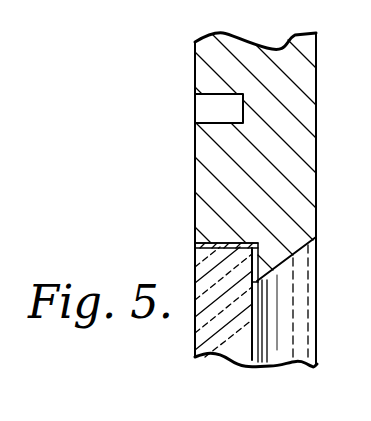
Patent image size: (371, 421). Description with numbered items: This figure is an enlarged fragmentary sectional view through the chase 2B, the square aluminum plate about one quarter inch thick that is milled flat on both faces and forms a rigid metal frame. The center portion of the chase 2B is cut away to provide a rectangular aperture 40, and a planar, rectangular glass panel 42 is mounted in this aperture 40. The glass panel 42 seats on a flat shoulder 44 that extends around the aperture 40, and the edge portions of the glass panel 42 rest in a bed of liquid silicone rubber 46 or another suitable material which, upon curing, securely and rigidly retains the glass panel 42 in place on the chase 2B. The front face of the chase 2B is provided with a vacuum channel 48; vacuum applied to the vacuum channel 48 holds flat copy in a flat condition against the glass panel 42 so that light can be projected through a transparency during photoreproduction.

The chase 2B is at (305, 108).
The rectangular aperture 40 is at (258, 282).
The glass panel 42 is at (203, 330).
The flat shoulder 44 is at (256, 257).
The bed of liquid silicone rubber 46 is at (215, 243).
The vacuum channel 48 is at (205, 104).